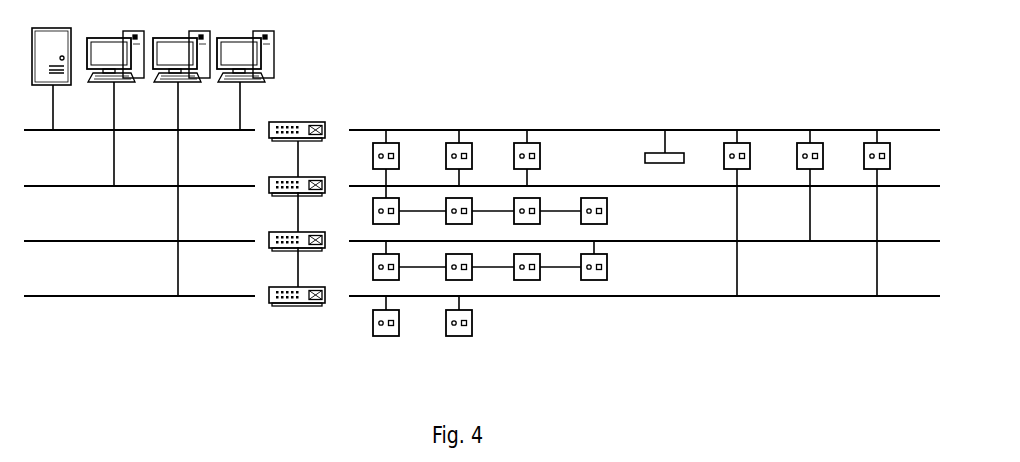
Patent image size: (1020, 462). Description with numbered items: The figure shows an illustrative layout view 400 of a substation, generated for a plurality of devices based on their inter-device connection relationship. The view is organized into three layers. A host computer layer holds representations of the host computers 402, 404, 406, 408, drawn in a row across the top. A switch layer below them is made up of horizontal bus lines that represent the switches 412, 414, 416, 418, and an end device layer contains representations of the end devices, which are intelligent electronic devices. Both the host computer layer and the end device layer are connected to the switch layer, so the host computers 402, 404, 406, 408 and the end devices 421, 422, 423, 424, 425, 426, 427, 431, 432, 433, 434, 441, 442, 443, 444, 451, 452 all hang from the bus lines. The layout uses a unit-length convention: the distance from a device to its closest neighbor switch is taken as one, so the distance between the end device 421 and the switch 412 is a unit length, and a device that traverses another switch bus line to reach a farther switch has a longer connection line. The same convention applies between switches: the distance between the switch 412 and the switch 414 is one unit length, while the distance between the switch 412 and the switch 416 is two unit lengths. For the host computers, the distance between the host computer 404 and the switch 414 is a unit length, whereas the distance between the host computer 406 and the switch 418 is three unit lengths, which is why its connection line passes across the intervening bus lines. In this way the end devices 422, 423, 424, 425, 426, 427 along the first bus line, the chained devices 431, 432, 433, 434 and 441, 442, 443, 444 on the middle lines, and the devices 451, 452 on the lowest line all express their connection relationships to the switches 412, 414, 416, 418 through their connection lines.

The layout view 400 is at (653, 48).
The host computer 402 is at (58, 28).
The host computer 404 is at (131, 31).
The host computer 406 is at (195, 31).
The host computer 408 is at (256, 31).
The switch 412 is at (316, 122).
The switch 414 is at (316, 177).
The switch 416 is at (316, 232).
The switch 418 is at (316, 287).
The end device 421 is at (399, 150).
The end device 422 is at (472, 150).
The end device 423 is at (540, 150).
The end device 424 is at (679, 152).
The end device 425 is at (750, 150).
The end device 426 is at (823, 150).
The end device 427 is at (890, 150).
The end device 431 is at (399, 206).
The end device 432 is at (472, 206).
The end device 433 is at (540, 206).
The end device 434 is at (607, 206).
The end device 441 is at (399, 258).
The end device 442 is at (472, 258).
The end device 443 is at (540, 258).
The end device 444 is at (607, 258).
The end device 451 is at (399, 318).
The end device 452 is at (472, 318).